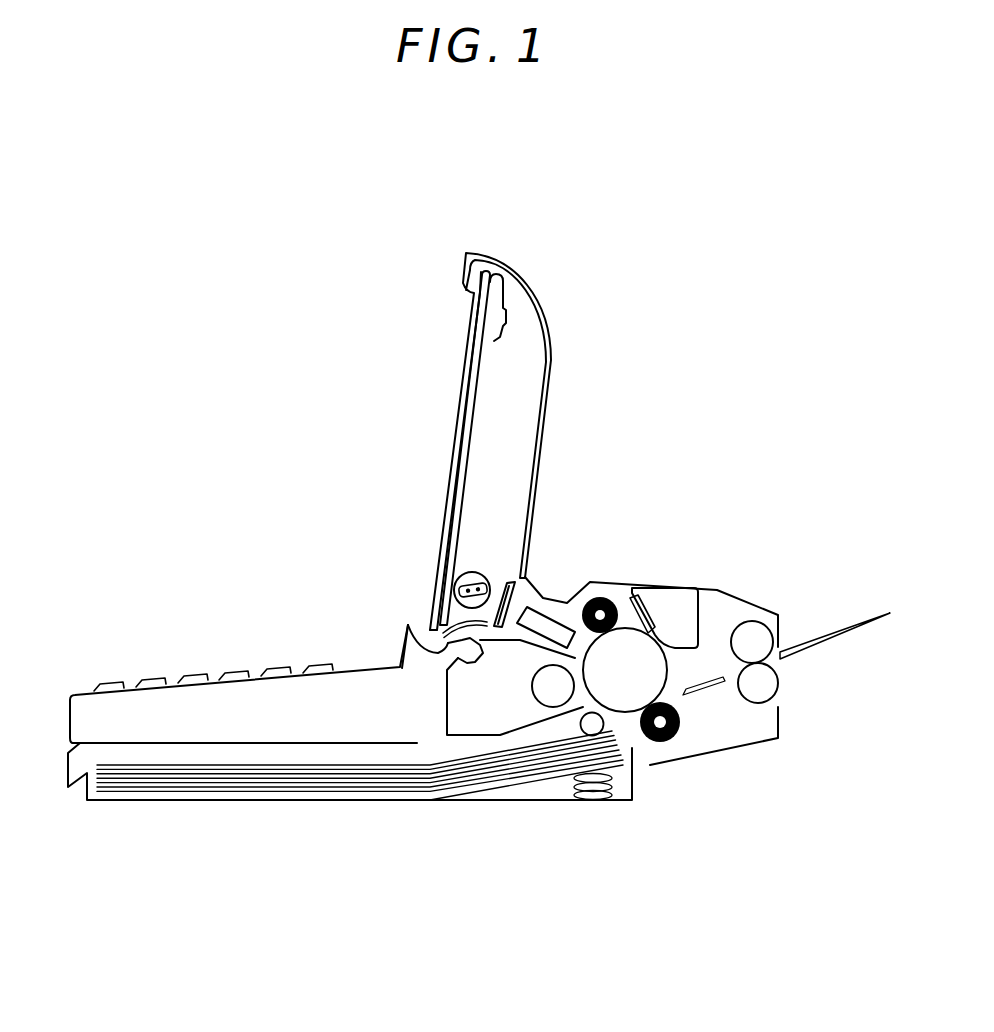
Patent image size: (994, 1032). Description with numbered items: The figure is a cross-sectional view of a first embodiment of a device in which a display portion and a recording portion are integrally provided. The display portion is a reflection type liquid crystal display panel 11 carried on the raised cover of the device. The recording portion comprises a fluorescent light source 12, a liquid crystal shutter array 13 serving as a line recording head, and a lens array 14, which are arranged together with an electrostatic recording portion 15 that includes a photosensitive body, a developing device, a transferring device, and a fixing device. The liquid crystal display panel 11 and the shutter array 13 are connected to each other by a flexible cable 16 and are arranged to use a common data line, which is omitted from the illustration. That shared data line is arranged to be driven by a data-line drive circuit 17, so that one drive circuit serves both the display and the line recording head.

The reflection type liquid crystal display panel 11 is at (460, 396).
The fluorescent light source 12 is at (455, 582).
The liquid crystal shutter array 13 is at (527, 577).
The lens array 14 is at (557, 615).
The electrostatic recording portion 15 is at (672, 763).
The flexible cable 16 is at (408, 625).
The data-line drive circuit 17 is at (507, 318).